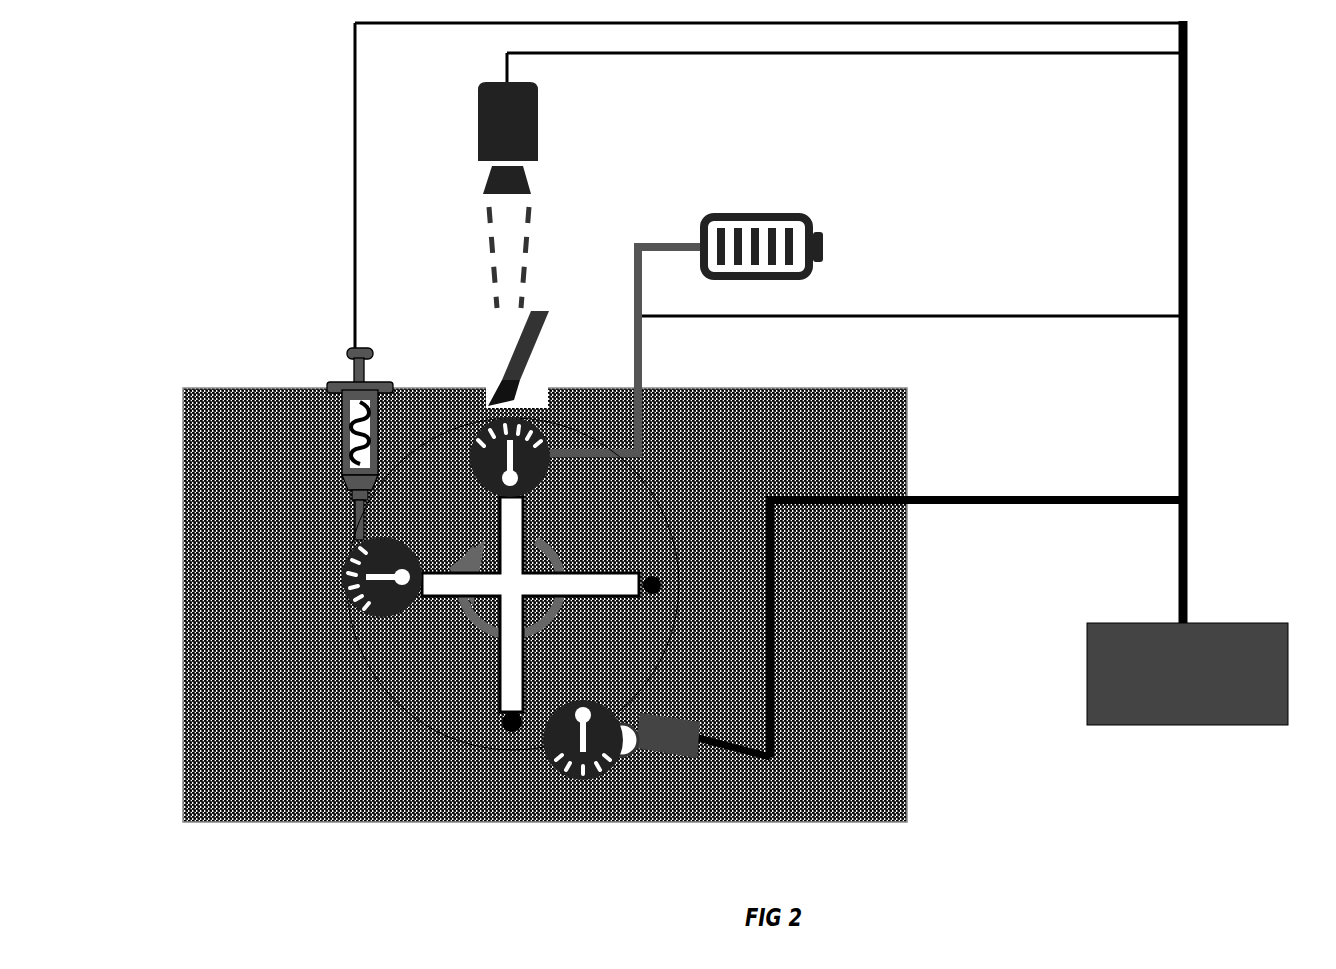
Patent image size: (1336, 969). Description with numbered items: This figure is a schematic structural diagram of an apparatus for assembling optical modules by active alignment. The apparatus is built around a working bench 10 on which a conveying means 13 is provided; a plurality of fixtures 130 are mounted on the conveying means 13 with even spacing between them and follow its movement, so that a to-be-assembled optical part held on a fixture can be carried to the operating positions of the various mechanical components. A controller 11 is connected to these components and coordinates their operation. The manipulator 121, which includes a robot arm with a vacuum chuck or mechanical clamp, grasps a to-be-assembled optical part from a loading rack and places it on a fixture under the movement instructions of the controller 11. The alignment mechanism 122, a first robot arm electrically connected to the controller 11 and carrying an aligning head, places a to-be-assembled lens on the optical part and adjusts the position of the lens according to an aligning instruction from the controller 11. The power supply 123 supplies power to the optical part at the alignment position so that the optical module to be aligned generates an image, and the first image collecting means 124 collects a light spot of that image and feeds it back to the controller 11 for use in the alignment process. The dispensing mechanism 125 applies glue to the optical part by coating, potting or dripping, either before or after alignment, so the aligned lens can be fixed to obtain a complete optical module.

The working bench 10 is at (886, 411).
The controller 11 is at (1087, 650).
The conveying means 13 is at (640, 482).
The manipulator 121 is at (636, 706).
The alignment mechanism 122 is at (525, 358).
The power supply 123 is at (823, 247).
The first image collecting means 124 is at (538, 114).
The dispensing mechanism 125 is at (352, 370).
The fixtures 130 is at (664, 586).